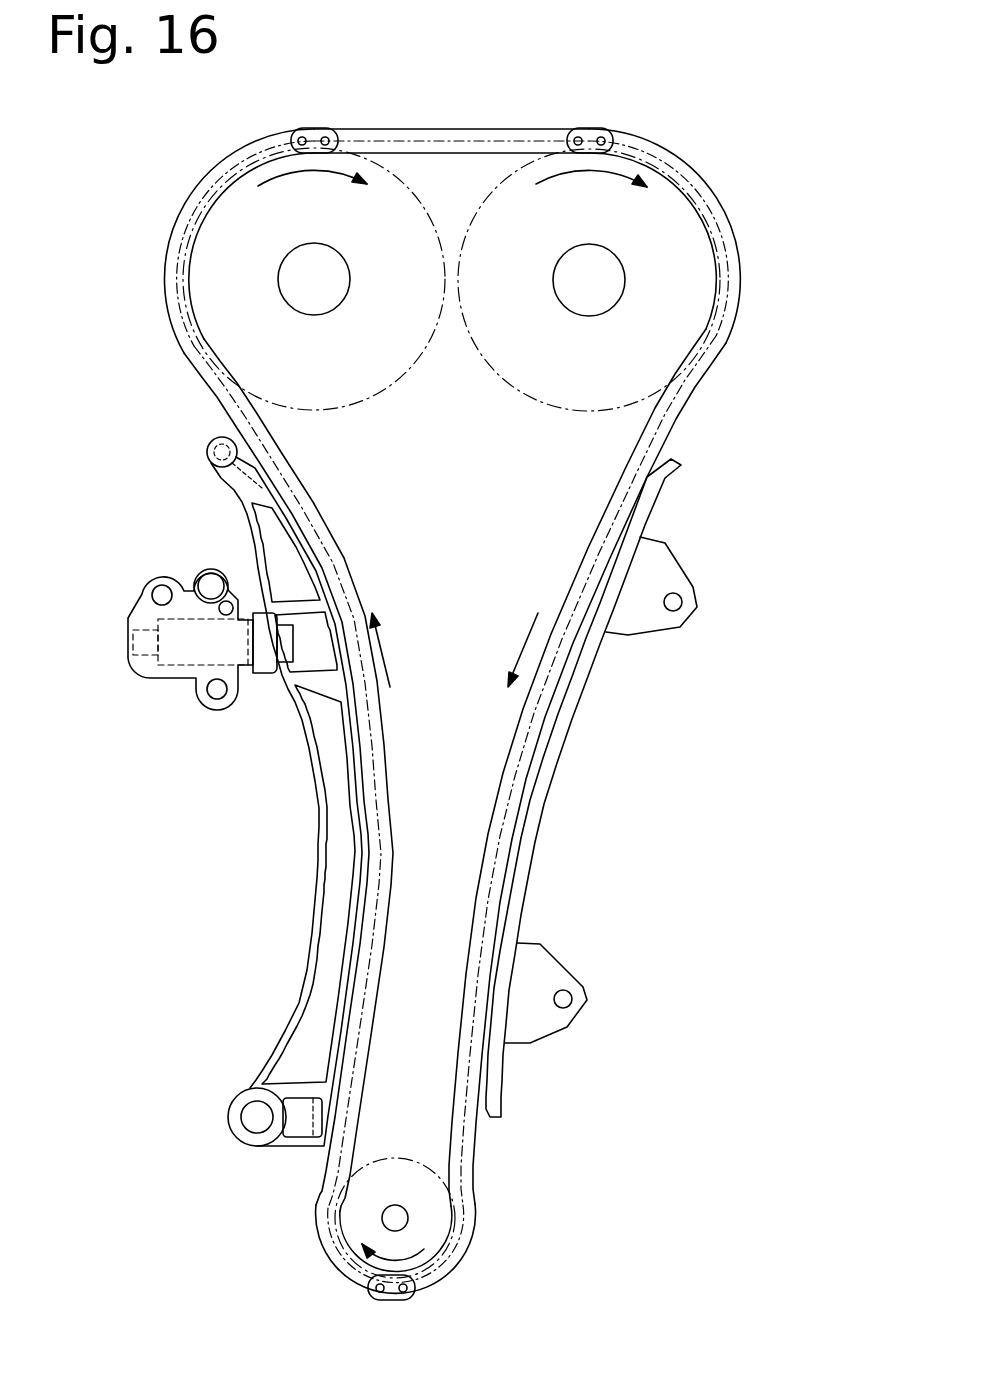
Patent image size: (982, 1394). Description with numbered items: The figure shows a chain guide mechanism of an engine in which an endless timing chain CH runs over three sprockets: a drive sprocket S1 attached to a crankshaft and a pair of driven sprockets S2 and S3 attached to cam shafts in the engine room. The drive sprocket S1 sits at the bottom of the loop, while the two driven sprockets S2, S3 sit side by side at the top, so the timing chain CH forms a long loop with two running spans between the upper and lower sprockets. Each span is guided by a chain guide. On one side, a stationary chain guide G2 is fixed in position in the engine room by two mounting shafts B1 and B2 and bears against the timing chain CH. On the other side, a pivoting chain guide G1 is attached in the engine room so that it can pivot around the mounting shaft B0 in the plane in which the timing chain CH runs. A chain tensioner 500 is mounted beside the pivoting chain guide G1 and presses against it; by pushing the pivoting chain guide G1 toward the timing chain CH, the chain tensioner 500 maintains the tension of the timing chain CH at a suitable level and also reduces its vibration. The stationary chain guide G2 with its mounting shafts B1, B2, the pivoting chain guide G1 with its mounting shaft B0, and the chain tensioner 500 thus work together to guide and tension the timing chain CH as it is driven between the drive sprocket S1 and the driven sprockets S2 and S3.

The drive sprocket S1 is at (428, 1220).
The driven sprocket S2 is at (218, 268).
The driven sprocket S3 is at (662, 262).
The timing chain CH is at (665, 414).
The pivoting chain guide G1 is at (322, 992).
The stationary chain guide G2 is at (524, 830).
The mounting shaft B0 is at (250, 1112).
The mounting shaft B1 is at (682, 602).
The mounting shaft B2 is at (572, 999).
The chain tensioner 500 is at (145, 613).